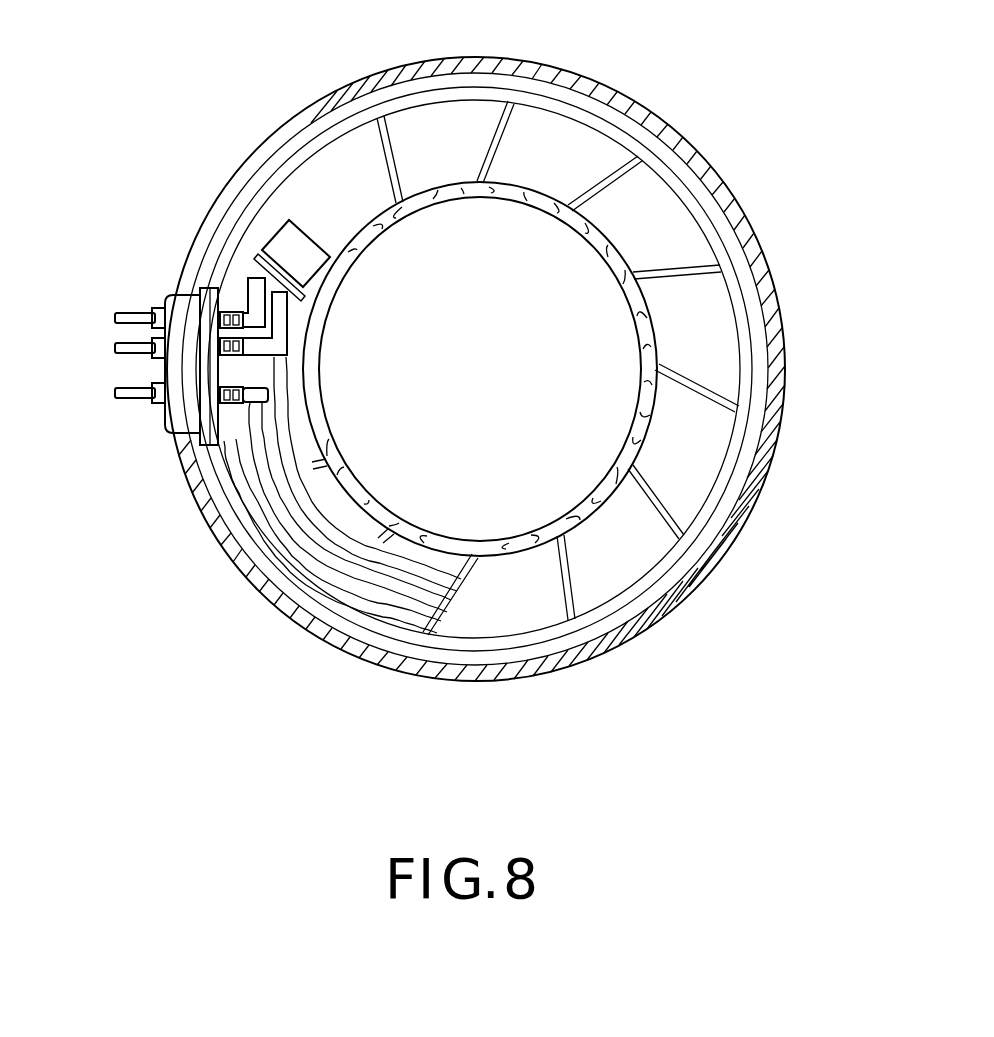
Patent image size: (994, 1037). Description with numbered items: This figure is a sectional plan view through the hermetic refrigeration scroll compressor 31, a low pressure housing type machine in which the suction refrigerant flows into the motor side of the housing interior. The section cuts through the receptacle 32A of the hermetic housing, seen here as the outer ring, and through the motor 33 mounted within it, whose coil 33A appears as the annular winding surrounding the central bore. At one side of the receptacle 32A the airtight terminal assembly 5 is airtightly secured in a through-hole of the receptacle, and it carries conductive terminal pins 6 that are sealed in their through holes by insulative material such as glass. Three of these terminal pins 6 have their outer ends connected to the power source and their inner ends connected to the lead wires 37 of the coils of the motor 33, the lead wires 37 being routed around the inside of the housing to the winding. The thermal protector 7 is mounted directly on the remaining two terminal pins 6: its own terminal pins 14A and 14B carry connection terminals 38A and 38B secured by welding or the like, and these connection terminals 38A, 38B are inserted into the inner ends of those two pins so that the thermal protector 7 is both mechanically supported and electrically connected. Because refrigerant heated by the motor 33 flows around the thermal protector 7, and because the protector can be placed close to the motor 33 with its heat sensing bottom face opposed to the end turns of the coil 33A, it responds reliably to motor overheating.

The airtight terminal assembly 5 is at (180, 420).
The conductive terminal pins 6 is at (107, 322).
The thermal protector 7 is at (302, 247).
The terminal pin of thermal protector 14A is at (257, 272).
The terminal pin of thermal protector 14B is at (305, 305).
The hermetic refrigeration scroll compressor 31 is at (703, 607).
The receptacle 32A is at (777, 400).
The motor 33 is at (593, 123).
The coil 33A is at (647, 227).
The lead wires 37 is at (368, 557).
The connection terminal 38A is at (253, 297).
The connection terminal 38B is at (288, 335).